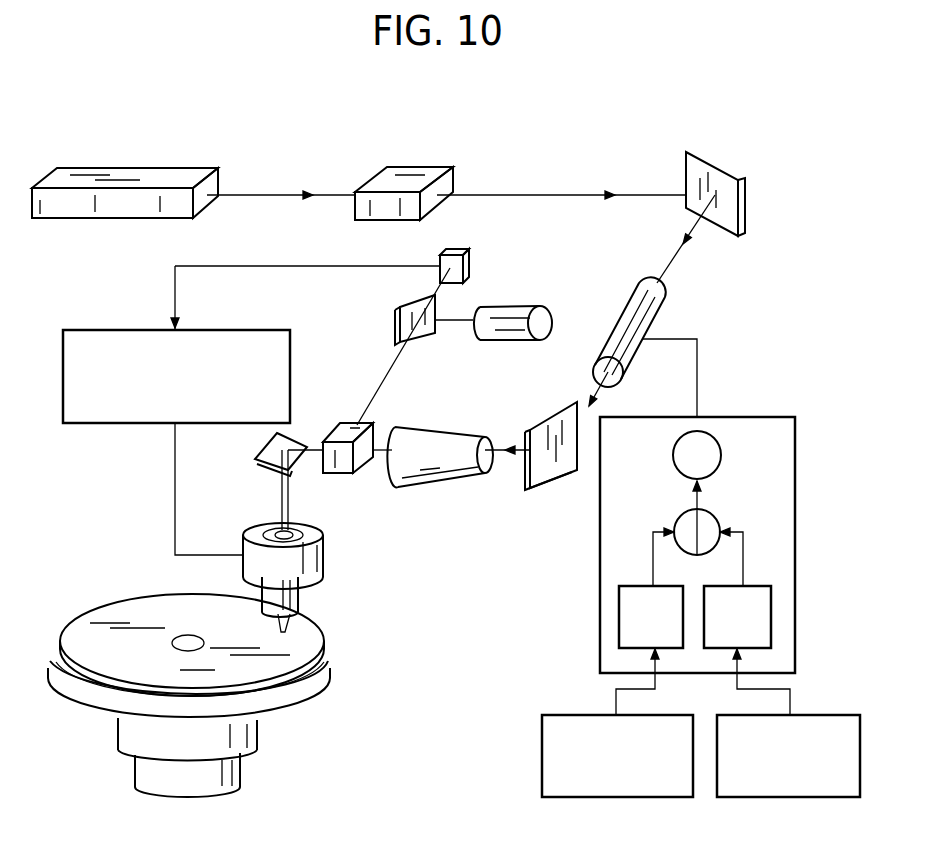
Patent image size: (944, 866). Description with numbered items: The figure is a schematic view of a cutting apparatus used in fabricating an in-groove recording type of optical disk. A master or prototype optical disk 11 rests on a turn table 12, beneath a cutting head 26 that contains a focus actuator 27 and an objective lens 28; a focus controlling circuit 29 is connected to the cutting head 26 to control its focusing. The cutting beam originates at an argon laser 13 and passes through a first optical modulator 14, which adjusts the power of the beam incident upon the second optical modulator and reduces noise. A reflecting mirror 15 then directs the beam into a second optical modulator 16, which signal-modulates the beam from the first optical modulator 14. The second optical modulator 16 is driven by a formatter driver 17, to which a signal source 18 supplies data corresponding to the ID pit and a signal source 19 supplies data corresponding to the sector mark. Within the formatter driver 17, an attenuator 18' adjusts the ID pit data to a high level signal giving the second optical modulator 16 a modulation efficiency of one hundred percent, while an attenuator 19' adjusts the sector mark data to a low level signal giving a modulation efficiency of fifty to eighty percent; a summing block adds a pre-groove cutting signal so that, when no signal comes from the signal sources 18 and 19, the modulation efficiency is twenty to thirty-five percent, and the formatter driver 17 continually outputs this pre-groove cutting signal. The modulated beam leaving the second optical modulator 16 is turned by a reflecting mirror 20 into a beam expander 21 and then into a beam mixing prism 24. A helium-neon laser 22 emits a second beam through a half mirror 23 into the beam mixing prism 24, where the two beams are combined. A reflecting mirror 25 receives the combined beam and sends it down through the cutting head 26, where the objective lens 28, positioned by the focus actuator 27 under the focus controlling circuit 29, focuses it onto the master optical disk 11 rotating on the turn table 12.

The master optical disk 11 is at (303, 640).
The turn table 12 is at (323, 685).
The argon laser 13 is at (148, 168).
The first optical modulator 14 is at (404, 156).
The reflecting mirror 15 is at (712, 160).
The second optical modulator 16 is at (660, 318).
The formatter driver 17 is at (797, 563).
The signal source 18 is at (617, 755).
The signal source 19 is at (788, 755).
The attenuator 18' is at (649, 576).
The attenuator 19' is at (741, 576).
The reflecting mirror 20 is at (556, 490).
The beam expander 21 is at (437, 428).
The helium-neon laser 22 is at (520, 305).
The half mirror 23 is at (398, 325).
The beam mixing prism 24 is at (347, 422).
The reflecting mirror 25 is at (470, 262).
The cutting head 26 is at (318, 528).
The focus actuator 27 is at (325, 560).
The objective lens 28 is at (300, 592).
The focus controlling circuit 29 is at (122, 328).